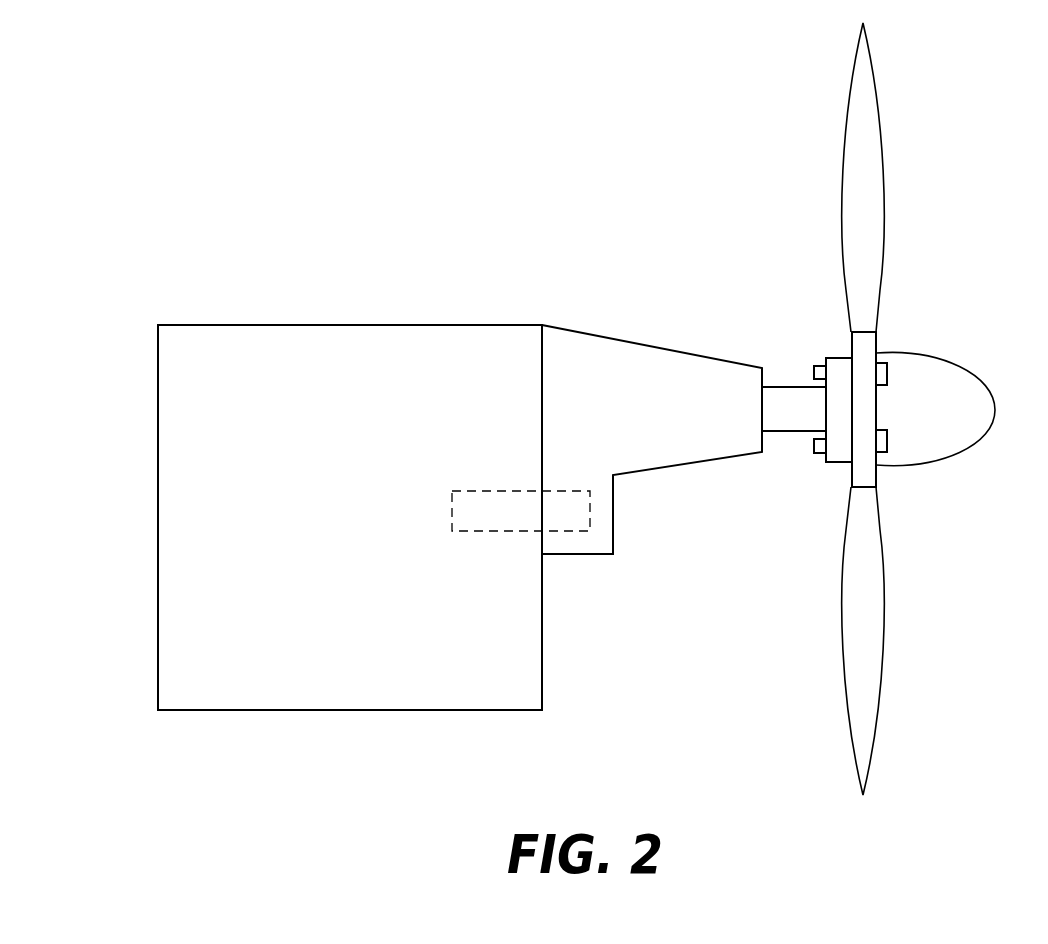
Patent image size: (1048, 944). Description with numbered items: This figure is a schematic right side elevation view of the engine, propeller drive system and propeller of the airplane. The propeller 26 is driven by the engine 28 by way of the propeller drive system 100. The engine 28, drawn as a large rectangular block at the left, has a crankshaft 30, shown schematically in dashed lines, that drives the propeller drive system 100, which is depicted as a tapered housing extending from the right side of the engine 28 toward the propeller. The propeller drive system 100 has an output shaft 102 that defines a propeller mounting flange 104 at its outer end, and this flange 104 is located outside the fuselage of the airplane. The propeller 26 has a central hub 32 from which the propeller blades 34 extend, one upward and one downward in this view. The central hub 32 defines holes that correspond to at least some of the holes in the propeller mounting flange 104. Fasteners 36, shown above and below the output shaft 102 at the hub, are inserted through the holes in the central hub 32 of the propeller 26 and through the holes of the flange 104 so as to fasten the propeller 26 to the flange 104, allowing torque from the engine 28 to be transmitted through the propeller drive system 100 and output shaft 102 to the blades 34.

The propeller 26 is at (930, 188).
The engine 28 is at (377, 350).
The crankshaft 30 is at (495, 532).
The central hub 32 is at (862, 350).
The propeller blades 34 is at (872, 92).
The fasteners 36 is at (887, 377).
The propeller drive system 100 is at (670, 370).
The output shaft 102 is at (800, 433).
The propeller mounting flange 104 is at (840, 363).